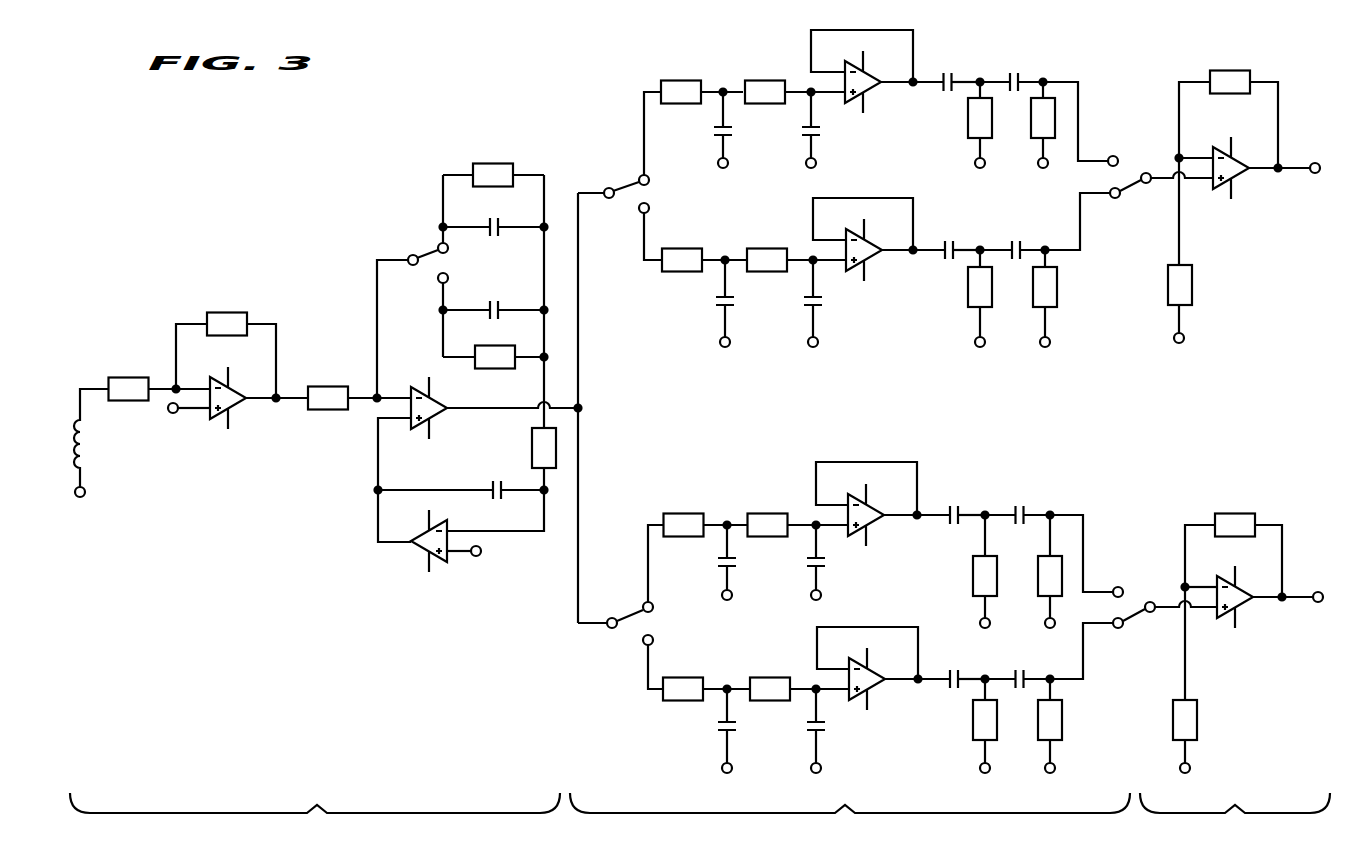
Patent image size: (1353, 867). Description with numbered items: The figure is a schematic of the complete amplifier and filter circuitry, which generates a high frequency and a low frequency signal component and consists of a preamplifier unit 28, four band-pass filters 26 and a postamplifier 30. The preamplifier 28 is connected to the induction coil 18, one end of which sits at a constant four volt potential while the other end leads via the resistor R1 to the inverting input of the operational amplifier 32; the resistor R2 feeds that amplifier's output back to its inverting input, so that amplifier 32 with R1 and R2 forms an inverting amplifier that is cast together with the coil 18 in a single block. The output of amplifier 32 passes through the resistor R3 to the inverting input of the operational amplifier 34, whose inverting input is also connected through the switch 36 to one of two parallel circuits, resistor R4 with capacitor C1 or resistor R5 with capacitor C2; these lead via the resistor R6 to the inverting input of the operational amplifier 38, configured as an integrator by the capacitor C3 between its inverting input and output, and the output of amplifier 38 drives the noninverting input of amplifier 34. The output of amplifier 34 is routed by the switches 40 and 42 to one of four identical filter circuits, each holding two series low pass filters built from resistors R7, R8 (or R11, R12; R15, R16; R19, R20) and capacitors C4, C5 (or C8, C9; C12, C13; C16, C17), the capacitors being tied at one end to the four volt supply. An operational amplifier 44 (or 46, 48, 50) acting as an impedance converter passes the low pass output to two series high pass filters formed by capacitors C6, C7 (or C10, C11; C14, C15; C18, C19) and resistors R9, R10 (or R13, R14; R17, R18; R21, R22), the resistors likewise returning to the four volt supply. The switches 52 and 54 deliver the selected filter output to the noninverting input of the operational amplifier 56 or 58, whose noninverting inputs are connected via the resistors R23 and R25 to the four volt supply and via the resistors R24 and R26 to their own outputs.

The induction coil 18 is at (88, 440).
The band-pass filters 26 is at (850, 821).
The preamplifier unit 28 is at (315, 821).
The postamplifier 30 is at (1235, 821).
The operational amplifier 32 is at (234, 408).
The operational amplifier 34 is at (441, 403).
The switch 36 is at (434, 251).
The operational amplifier 38 is at (426, 557).
The switch 40 is at (632, 186).
The switch 42 is at (636, 612).
The operational amplifier 44 is at (873, 77).
The operational amplifier 46 is at (873, 245).
The operational amplifier 48 is at (873, 510).
The operational amplifier 50 is at (873, 675).
The switch 52 is at (1141, 188).
The switch 54 is at (1140, 616).
The operational amplifier 56 is at (1237, 161).
The operational amplifier 58 is at (1237, 610).
The resistor R1 is at (129, 379).
The resistor R2 is at (226, 343).
The resistor R3 is at (328, 386).
The resistor R4 is at (493, 164).
The resistor R5 is at (495, 346).
The resistor R6 is at (557, 448).
The resistor R7 is at (681, 81).
The resistor R8 is at (765, 81).
The resistor R9 is at (959, 124).
The resistor R10 is at (1058, 110).
The resistor R11 is at (680, 248).
The resistor R12 is at (766, 248).
The resistor R13 is at (956, 297).
The resistor R14 is at (1069, 297).
The resistor R15 is at (683, 514).
The resistor R16 is at (768, 514).
The resistor R17 is at (962, 570).
The resistor R18 is at (1063, 578).
The resistor R19 is at (684, 676).
The resistor R20 is at (771, 676).
The resistor R21 is at (961, 725).
The resistor R22 is at (1076, 725).
The resistor R23 is at (1205, 269).
The resistor R24 is at (1228, 108).
The resistor R25 is at (1210, 695).
The resistor R26 is at (1233, 545).
The capacitor C1 is at (494, 215).
The capacitor C2 is at (494, 299).
The capacitor C3 is at (461, 479).
The capacitor C4 is at (705, 130).
The capacitor C5 is at (826, 130).
The capacitor C6 is at (957, 71).
The capacitor C7 is at (1011, 71).
The capacitor C8 is at (706, 303).
The capacitor C9 is at (795, 303).
The capacitor C10 is at (953, 239).
The capacitor C11 is at (1012, 239).
The capacitor C12 is at (703, 562).
The capacitor C13 is at (794, 562).
The capacitor C14 is at (957, 504).
The capacitor C15 is at (1017, 504).
The capacitor C16 is at (701, 731).
The capacitor C17 is at (794, 731).
The capacitor C18 is at (957, 668).
The capacitor C19 is at (1017, 668).